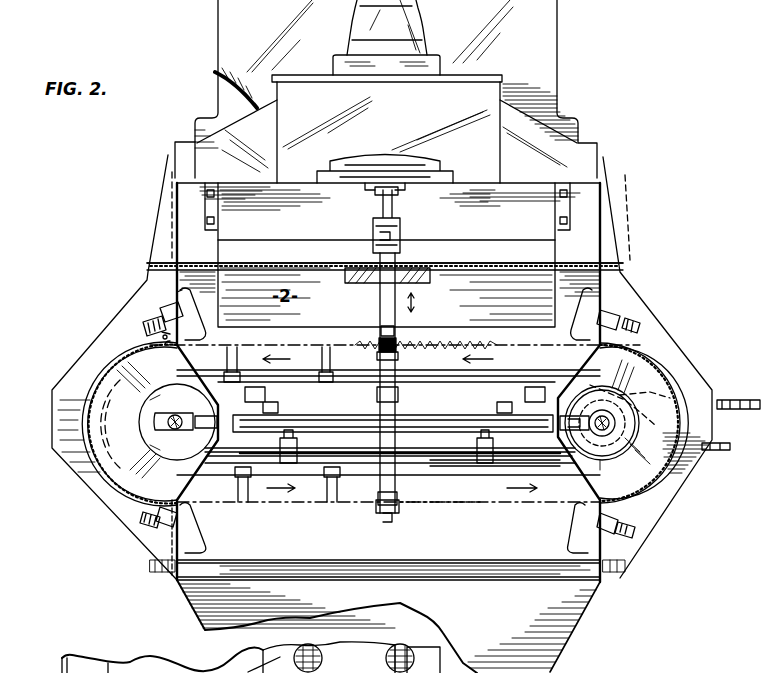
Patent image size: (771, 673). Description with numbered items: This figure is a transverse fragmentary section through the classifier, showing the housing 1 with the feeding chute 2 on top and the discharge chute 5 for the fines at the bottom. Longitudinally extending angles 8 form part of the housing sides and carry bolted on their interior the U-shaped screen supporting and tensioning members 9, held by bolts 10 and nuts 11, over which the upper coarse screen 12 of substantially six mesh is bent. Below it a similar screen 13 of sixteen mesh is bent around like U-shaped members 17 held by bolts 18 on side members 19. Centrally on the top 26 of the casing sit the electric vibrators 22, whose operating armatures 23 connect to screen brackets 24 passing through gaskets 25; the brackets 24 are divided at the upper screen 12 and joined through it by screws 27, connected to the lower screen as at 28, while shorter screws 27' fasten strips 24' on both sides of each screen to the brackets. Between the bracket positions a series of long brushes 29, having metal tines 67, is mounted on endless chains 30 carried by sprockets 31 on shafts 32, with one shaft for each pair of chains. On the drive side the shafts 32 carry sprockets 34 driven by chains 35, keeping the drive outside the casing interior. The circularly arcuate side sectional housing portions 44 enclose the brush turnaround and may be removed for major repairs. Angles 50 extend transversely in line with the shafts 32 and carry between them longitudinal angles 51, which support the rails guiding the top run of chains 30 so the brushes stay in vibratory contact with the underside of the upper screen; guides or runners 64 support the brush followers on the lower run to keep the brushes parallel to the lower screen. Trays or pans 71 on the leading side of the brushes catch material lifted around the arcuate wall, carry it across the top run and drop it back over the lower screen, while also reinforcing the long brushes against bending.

The housing 1 is at (623, 280).
The feeding chute 2 is at (535, 82).
The discharge chute for the fines 5 is at (188, 600).
The longitudinally extending angles 8 is at (165, 290).
The U-shaped screen supporting and tensioning members 9 is at (190, 328).
The bolts 10 is at (143, 328).
The nuts 11 is at (162, 337).
The upper coarse screen 12 is at (477, 343).
The lower screen 13 is at (442, 502).
The U-shaped screen supporting and tensioning members 17 is at (200, 520).
The bolts 18 is at (200, 537).
The side members 19 is at (175, 543).
The electric vibrators 22 is at (395, 25).
The operating armatures 23 is at (393, 200).
The screen brackets 24 is at (393, 383).
The strips 24' is at (399, 427).
The gaskets 25 is at (402, 267).
The top of the casing 26 is at (310, 267).
The screws 27 is at (411, 352).
The shorter screws 27' is at (417, 423).
The connection to lower screen 28 is at (398, 497).
The long brushes 29 is at (130, 393).
The endless chains 30 is at (537, 463).
The sprockets 31 is at (640, 407).
The shafts 32 is at (607, 432).
The sprockets 34 is at (637, 412).
The chains 35 is at (725, 405).
The side sectional housing portion 44 is at (100, 470).
The angles 50 is at (483, 422).
The angles 51 is at (277, 413).
The guides or runners 64 is at (300, 450).
The metal tines 67 is at (118, 380).
The trays or pans 71 is at (53, 417).